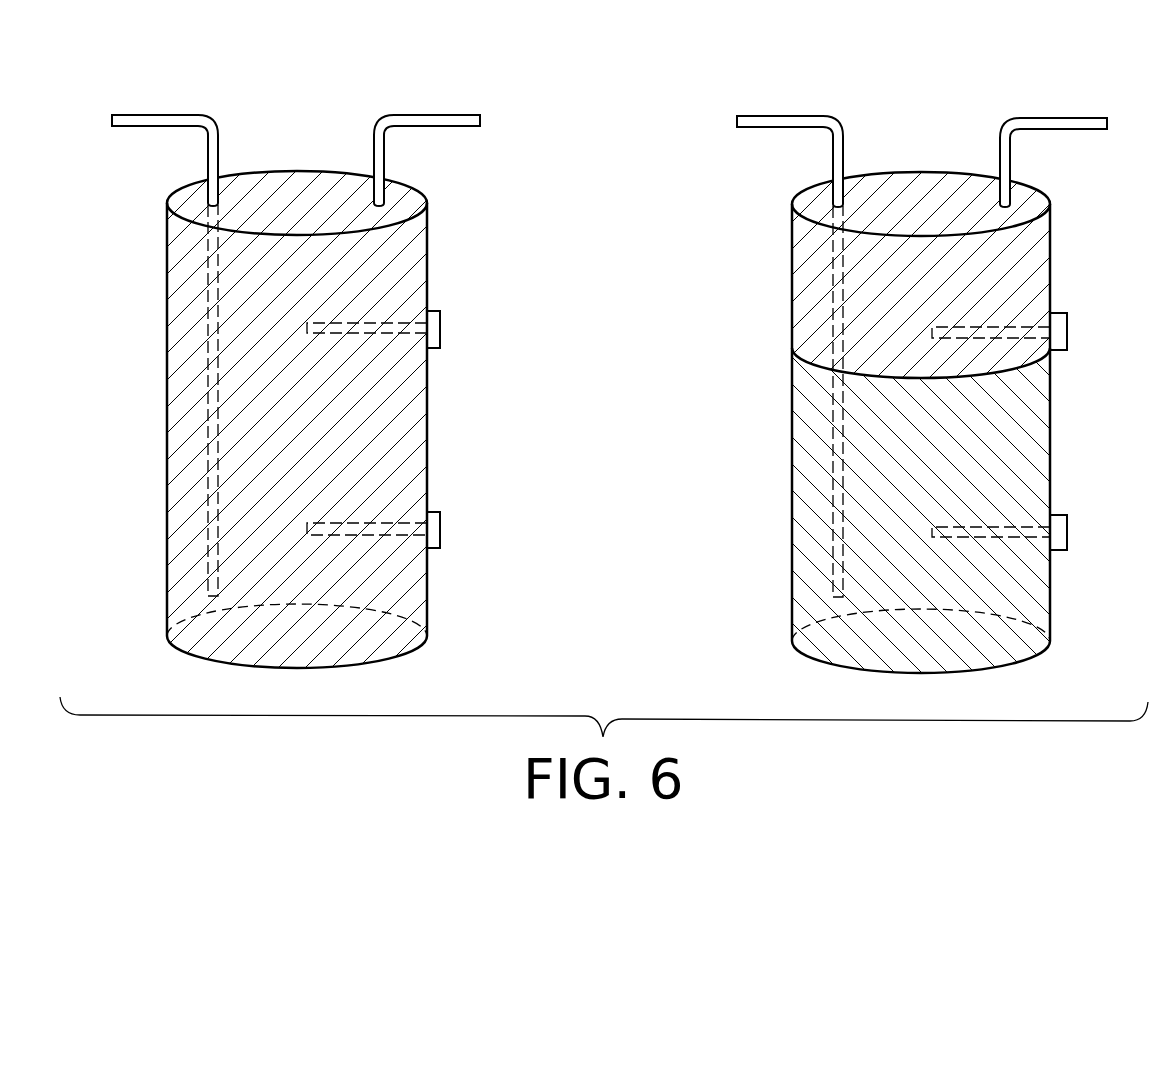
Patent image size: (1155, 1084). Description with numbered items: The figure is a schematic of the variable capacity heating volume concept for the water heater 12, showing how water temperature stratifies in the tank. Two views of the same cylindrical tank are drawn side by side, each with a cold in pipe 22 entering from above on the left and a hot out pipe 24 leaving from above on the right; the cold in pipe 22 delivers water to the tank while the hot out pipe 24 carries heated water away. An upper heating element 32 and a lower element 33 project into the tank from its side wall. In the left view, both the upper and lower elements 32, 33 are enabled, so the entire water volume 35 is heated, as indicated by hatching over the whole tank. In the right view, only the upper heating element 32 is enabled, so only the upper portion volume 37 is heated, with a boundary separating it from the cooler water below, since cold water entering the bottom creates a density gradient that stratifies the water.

The water heater 12 is at (428, 425).
The cold in pipe 22 is at (466, 161).
The hot out pipe 24 is at (750, 161).
The upper heating element 32 is at (434, 309).
The lower element 33 is at (1062, 522).
The entire water volume 35 is at (243, 450).
The upper portion volume 37 is at (863, 302).